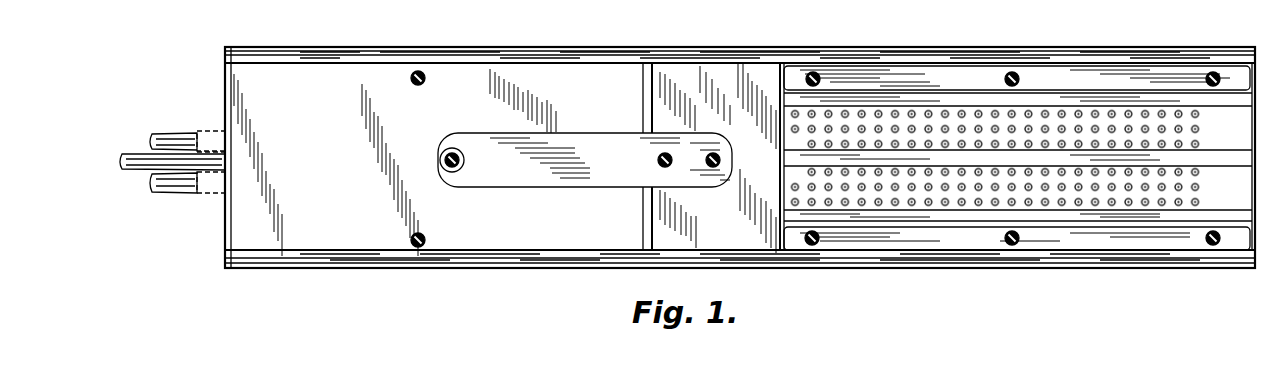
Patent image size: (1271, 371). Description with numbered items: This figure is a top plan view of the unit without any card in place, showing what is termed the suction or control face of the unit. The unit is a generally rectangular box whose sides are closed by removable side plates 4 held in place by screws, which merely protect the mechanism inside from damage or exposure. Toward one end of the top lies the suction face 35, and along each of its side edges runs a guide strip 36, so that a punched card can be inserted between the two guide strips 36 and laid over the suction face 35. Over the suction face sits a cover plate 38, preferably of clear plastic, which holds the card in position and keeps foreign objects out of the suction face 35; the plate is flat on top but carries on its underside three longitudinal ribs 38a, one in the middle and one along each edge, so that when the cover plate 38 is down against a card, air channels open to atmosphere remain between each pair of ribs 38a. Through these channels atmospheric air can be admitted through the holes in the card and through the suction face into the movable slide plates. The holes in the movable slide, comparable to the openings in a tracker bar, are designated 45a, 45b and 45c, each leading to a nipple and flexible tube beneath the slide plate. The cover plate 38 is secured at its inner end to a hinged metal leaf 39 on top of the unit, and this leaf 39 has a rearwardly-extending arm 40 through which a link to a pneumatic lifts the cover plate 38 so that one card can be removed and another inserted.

The removable side plates 4 is at (290, 65).
The suction face 35 is at (885, 209).
The guide strip 36 is at (920, 73).
The cover plate 38 is at (952, 215).
The longitudinal ribs 38a is at (958, 98).
The hinged metal leaf 39 is at (680, 80).
The rearwardly-extending arm 40 is at (592, 138).
The hole in the movable slide 45a is at (1199, 114).
The hole in the movable slide 45b is at (1199, 129).
The hole in the movable slide 45c is at (1199, 144).